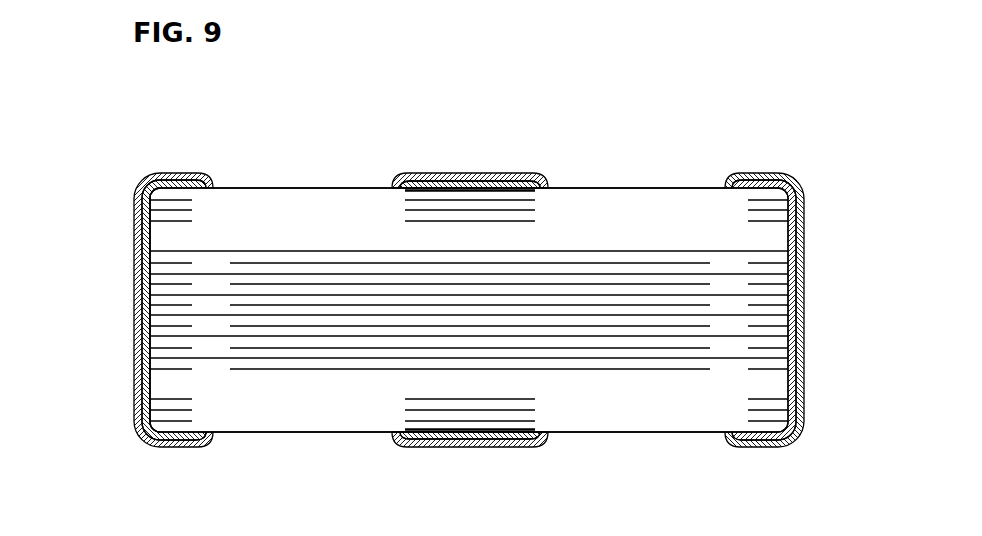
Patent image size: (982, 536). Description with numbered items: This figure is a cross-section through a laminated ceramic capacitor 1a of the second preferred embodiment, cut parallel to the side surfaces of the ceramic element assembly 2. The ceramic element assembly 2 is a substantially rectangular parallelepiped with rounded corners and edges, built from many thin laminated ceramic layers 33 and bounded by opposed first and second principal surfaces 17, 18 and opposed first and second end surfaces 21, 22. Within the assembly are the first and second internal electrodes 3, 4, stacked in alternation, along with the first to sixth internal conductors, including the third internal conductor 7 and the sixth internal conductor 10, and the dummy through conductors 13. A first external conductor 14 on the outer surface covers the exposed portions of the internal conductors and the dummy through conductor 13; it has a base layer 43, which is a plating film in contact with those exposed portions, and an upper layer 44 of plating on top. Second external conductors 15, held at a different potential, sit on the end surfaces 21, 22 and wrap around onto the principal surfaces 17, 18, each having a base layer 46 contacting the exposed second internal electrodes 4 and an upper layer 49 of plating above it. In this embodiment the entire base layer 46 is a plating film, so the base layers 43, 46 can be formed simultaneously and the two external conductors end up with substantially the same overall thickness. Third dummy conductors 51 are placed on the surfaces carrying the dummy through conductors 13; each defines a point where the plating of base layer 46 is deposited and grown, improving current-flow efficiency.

The laminated ceramic capacitor 1a is at (237, 106).
The ceramic element assembly 2 is at (657, 186).
The first internal electrode 3 is at (600, 368).
The second internal electrode 4 is at (727, 335).
The third internal conductor 7 is at (485, 176).
The sixth internal conductor 10 is at (470, 433).
The dummy through conductor 13 is at (508, 196).
The first external conductor 14 is at (444, 148).
The second external conductor 15 is at (436, 277).
The first principal surface 17 is at (302, 188).
The second principal surface 18 is at (333, 433).
The first end surface 21 is at (792, 231).
The second end surface 22 is at (145, 233).
The ceramic layer 33 is at (257, 365).
The base layer 43 is at (432, 172).
The upper layer 44 is at (456, 172).
The base layer 46 is at (145, 320).
The upper layer 49 is at (143, 348).
The third dummy conductor 51 is at (170, 210).